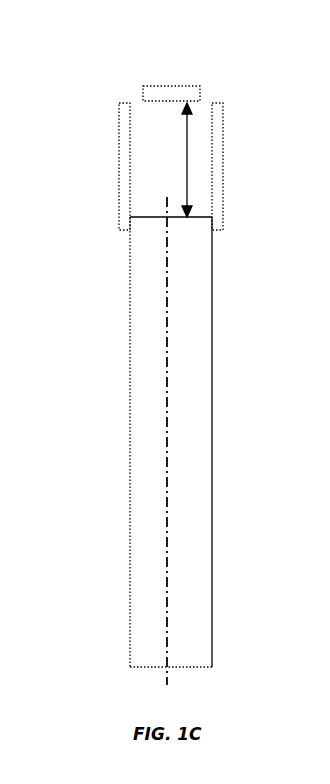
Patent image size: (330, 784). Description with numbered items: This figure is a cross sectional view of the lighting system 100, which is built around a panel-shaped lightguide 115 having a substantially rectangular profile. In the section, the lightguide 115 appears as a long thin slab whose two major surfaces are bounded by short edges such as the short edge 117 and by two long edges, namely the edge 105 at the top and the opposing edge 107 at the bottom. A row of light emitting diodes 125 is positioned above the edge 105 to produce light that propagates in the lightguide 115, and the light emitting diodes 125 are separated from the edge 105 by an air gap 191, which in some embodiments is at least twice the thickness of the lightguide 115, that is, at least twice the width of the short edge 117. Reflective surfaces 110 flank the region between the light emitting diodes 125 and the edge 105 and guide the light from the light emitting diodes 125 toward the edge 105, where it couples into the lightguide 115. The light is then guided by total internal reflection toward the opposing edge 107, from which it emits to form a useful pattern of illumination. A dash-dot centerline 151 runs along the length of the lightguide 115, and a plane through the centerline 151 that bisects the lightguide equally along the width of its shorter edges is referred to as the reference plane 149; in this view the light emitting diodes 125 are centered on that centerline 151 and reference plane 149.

The lighting system 100 is at (197, 58).
The light emitting diodes 125 is at (156, 79).
The reflective surfaces 110 is at (128, 170).
The air gap 191 is at (188, 189).
The edge 105 is at (146, 231).
The short edge 117 is at (140, 340).
The centerline 151 is at (166, 413).
The reference plane 149 is at (118, 441).
The lightguide 115 is at (232, 418).
The opposing edge 107 is at (180, 649).